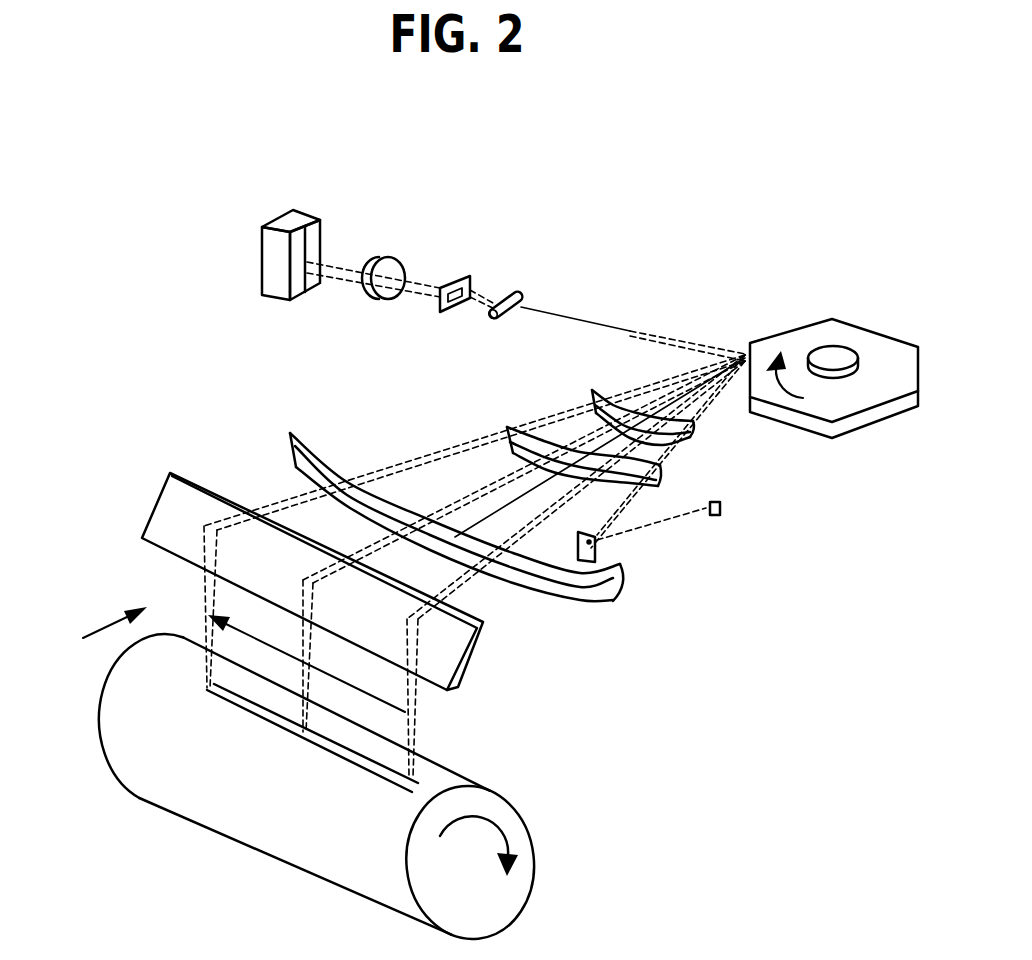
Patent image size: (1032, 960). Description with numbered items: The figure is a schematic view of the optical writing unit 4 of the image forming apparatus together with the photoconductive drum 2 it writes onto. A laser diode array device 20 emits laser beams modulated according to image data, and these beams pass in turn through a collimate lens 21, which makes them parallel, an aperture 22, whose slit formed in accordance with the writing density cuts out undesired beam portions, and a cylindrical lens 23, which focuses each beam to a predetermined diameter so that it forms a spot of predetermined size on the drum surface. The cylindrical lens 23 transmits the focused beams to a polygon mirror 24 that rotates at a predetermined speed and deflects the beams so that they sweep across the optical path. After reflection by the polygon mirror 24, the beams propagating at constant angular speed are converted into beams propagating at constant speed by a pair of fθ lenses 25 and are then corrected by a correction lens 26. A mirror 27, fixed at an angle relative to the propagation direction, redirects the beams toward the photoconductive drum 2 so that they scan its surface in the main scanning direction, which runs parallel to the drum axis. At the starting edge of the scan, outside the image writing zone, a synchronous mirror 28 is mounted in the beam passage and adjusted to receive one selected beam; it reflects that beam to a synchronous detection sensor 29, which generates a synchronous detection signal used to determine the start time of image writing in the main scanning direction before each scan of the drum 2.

The photoconductive drum 2 is at (447, 782).
The optical writing unit 4 is at (705, 199).
The laser diode array device 20 is at (303, 212).
The collimate lens 21 is at (388, 257).
The aperture 22 is at (467, 275).
The cylindrical lens 23 is at (521, 293).
The polygon mirror 24 is at (885, 342).
The pair of fθ lenses 25 is at (627, 482).
The correction lens 26 is at (294, 466).
The mirror 27 is at (455, 650).
The synchronous mirror 28 is at (597, 549).
The synchronous detection sensor 29 is at (722, 506).